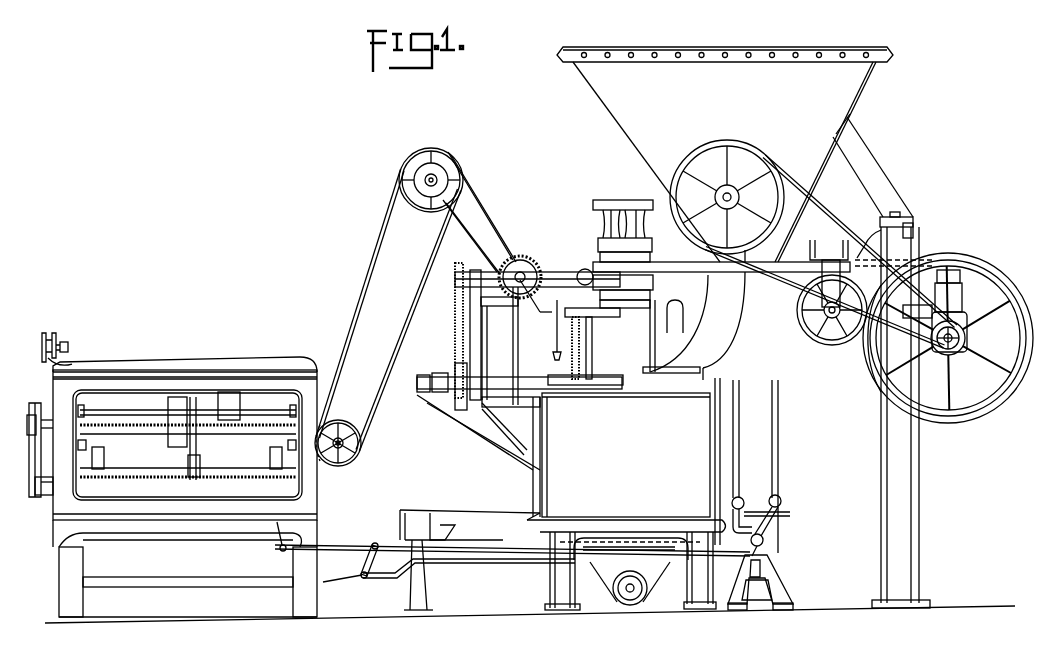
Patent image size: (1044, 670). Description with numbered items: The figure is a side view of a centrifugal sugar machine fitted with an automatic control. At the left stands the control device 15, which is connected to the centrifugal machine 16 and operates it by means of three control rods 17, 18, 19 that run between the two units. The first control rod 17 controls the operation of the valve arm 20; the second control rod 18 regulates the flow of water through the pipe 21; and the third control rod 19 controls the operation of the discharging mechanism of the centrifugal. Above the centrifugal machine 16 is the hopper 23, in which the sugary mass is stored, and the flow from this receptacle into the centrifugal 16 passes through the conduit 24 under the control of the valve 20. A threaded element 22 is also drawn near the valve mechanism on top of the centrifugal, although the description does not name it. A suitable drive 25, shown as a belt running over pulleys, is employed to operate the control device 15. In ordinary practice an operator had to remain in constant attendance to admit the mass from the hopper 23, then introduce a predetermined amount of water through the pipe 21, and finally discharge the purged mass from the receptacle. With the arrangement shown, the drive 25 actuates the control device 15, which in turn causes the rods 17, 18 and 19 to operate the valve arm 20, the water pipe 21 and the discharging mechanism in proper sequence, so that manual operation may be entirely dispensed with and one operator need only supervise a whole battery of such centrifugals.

The control device 15 is at (183, 386).
The centrifugal machine 16 is at (626, 455).
The control rod 17 is at (479, 556).
The control rod 18 is at (527, 552).
The control rod 19 is at (356, 547).
The valve arm 20 is at (658, 336).
The pipe 21 is at (718, 476).
The screw 22 is at (572, 346).
The hopper 23 is at (725, 154).
The conduit 24 is at (733, 318).
The drive 25 is at (370, 300).